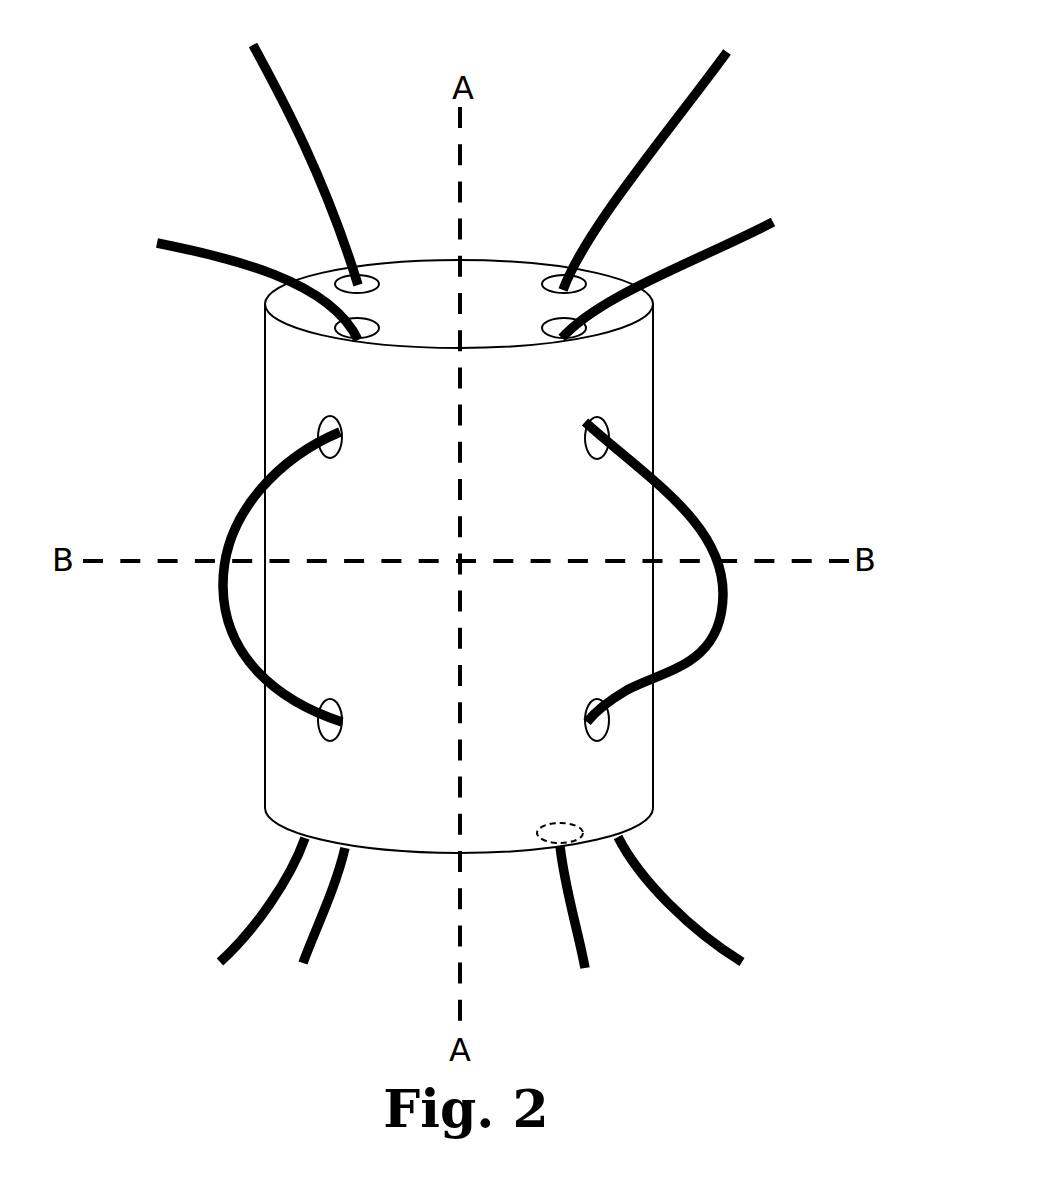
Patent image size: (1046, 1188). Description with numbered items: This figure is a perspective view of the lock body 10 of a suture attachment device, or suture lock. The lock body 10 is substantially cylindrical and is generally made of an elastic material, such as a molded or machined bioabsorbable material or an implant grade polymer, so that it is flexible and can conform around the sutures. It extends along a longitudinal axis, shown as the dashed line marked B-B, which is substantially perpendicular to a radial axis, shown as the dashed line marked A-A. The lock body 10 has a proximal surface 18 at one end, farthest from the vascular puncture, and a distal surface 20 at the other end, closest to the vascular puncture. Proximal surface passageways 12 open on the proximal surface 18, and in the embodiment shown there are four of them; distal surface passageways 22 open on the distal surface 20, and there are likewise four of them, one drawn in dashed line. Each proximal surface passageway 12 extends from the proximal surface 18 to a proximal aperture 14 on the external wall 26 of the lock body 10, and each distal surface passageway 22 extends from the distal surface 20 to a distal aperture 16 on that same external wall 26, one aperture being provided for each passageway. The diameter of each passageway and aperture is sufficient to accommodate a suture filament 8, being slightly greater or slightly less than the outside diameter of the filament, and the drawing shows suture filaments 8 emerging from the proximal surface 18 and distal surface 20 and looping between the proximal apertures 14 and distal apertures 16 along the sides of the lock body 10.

The suture filament 8 is at (667, 142).
The lock body 10 is at (436, 557).
The proximal surface passageway 12 is at (578, 332).
The proximal aperture 14 is at (603, 418).
The distal aperture 16 is at (610, 725).
The proximal surface 18 is at (507, 283).
The distal surface 20 is at (400, 855).
The distal surface passageway 22 is at (540, 840).
The external wall 26 is at (652, 453).